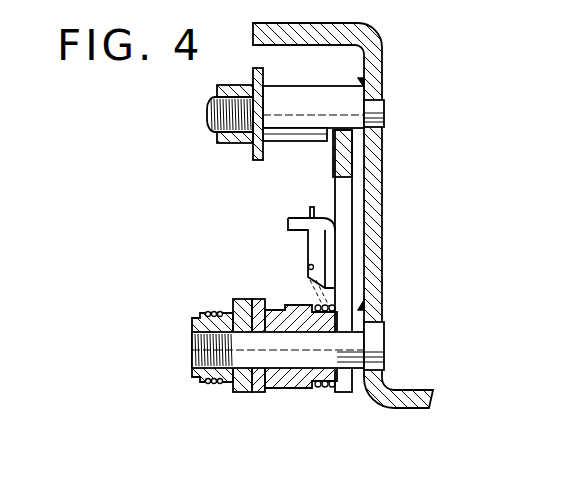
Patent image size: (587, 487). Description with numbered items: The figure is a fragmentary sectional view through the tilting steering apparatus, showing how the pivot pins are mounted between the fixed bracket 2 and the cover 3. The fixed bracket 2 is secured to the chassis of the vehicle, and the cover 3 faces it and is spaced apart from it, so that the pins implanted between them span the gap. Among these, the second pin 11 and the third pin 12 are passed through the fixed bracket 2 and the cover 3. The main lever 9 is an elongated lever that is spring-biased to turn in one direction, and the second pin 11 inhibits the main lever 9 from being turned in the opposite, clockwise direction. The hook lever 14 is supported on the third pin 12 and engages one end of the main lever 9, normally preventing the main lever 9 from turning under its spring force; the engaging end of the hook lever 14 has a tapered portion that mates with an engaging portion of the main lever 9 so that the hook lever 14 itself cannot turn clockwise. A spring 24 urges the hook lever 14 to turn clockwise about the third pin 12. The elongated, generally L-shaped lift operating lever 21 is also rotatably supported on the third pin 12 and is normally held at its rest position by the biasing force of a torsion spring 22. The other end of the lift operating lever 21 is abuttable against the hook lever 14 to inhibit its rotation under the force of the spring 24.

The fixed bracket 2 is at (373, 62).
The cover 3 is at (257, 160).
The main lever 9 is at (342, 160).
The second pin 11 is at (384, 115).
The third pin 12 is at (385, 347).
The hook lever 14 is at (342, 210).
The lift operating lever 21 is at (240, 393).
The torsion spring 22 is at (215, 313).
The spring 24 is at (308, 240).